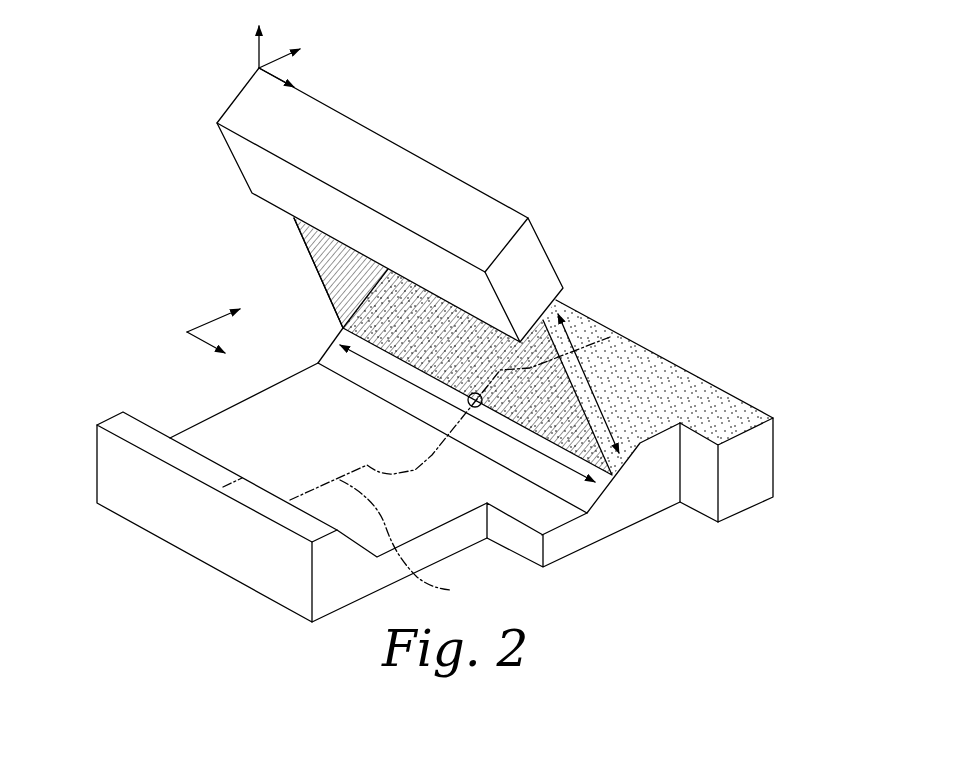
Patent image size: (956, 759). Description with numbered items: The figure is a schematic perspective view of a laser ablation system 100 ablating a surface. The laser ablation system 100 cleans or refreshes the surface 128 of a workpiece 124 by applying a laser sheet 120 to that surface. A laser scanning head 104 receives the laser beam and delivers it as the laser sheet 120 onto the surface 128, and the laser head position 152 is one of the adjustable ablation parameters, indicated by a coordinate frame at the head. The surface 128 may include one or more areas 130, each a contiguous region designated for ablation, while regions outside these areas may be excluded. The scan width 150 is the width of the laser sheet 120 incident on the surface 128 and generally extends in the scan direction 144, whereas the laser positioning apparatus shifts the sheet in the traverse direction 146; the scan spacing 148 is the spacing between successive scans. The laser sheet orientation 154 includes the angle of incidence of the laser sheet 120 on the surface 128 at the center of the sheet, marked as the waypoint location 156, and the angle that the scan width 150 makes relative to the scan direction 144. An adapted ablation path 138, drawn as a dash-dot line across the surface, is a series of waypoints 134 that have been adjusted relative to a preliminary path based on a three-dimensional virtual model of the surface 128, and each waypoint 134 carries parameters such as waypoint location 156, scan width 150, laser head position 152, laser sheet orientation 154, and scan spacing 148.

The laser ablation system 100 is at (547, 134).
The laser scanning head 104 is at (552, 260).
The laser sheet 120 is at (317, 273).
The workpiece 124 is at (774, 466).
The surface 128 is at (170, 436).
The area 130 is at (203, 440).
The waypoint 134 is at (649, 278).
The adapted ablation path 138 is at (416, 471).
The scan direction 144 is at (208, 345).
The traverse direction 146 is at (208, 323).
The scan spacing 148 is at (598, 403).
The scan width 150 is at (598, 485).
The laser head position 152 is at (242, 64).
The laser sheet orientation 154 is at (342, 310).
The waypoint location 156 is at (482, 408).